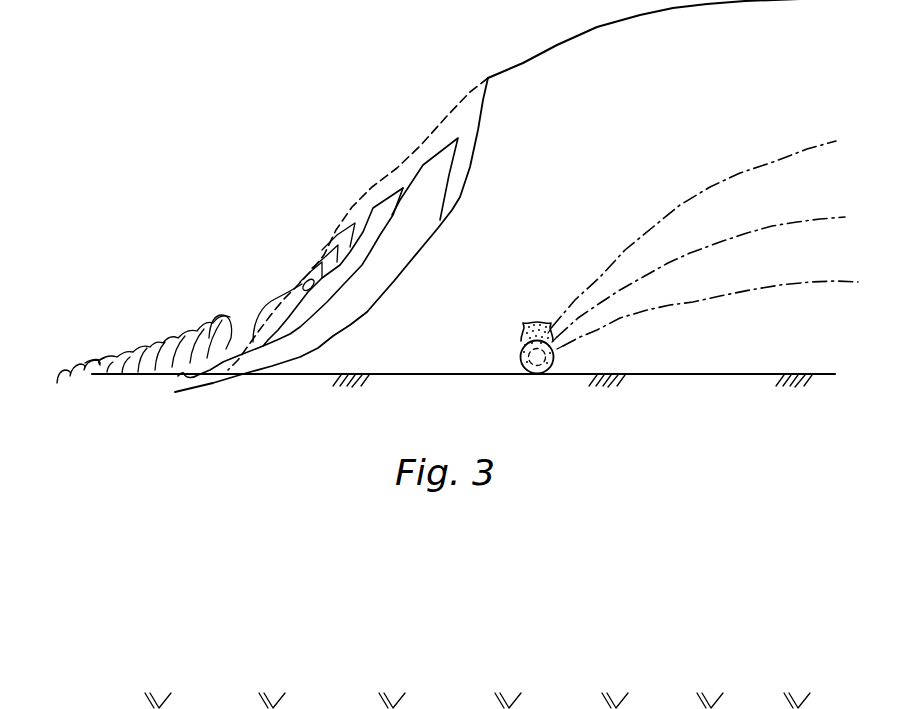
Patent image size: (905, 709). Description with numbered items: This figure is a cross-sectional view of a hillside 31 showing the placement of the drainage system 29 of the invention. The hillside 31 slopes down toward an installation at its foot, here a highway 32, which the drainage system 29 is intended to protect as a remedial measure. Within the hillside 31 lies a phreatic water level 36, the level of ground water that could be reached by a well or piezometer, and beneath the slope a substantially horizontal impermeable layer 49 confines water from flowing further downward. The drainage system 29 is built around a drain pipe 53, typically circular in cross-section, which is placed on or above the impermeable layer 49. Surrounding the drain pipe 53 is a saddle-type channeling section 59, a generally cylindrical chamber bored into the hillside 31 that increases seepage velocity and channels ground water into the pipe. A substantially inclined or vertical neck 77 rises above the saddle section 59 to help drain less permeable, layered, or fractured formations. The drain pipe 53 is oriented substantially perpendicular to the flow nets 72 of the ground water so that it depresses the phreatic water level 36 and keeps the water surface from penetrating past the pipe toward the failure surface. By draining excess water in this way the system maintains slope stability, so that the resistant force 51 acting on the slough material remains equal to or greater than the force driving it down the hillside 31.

The drainage system 29 is at (560, 347).
The hillside 31 is at (523, 63).
The highway 32 is at (138, 362).
The phreatic water level 36 is at (672, 210).
The impermeable layer 49 is at (740, 374).
The resistant force 51 is at (415, 230).
The drain pipe 53 is at (564, 359).
The saddle-type channeling section 59 is at (518, 350).
The flow nets 72 is at (760, 230).
The neck 77 is at (523, 333).